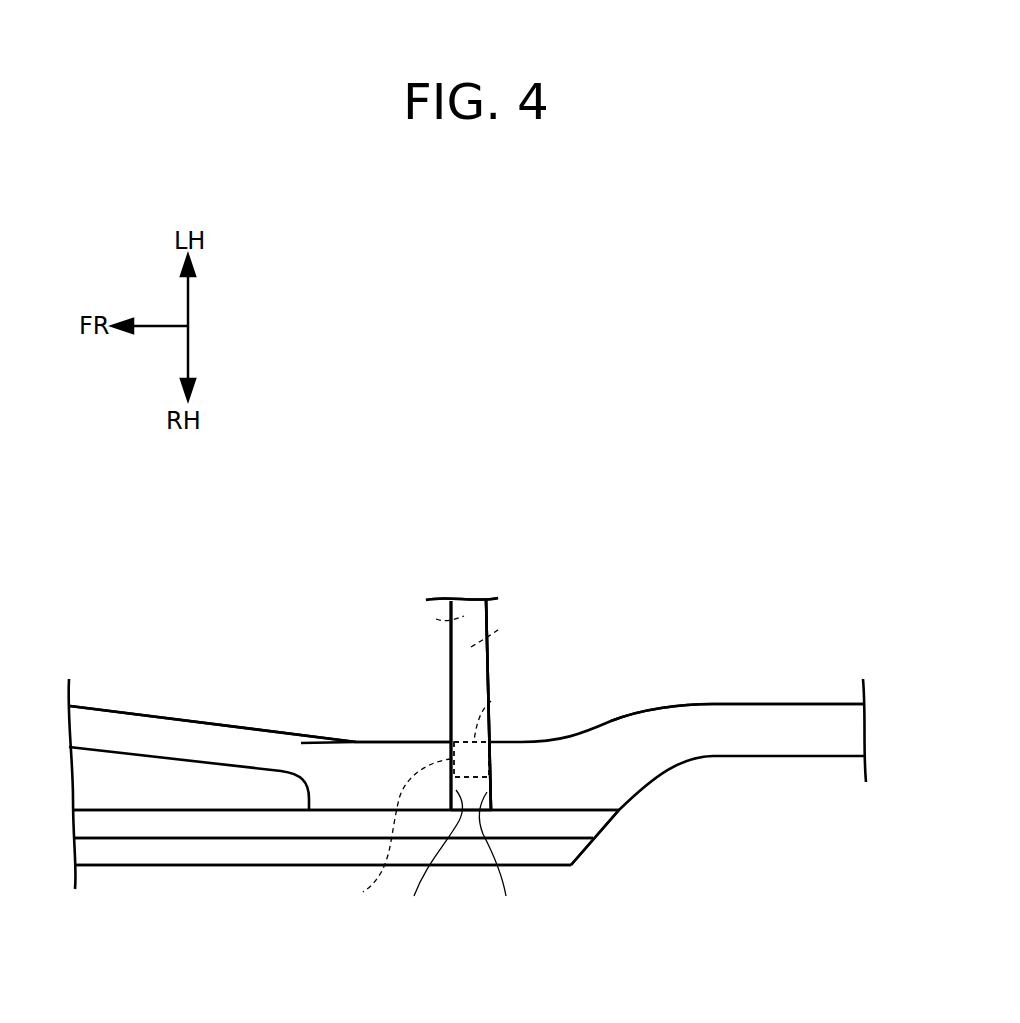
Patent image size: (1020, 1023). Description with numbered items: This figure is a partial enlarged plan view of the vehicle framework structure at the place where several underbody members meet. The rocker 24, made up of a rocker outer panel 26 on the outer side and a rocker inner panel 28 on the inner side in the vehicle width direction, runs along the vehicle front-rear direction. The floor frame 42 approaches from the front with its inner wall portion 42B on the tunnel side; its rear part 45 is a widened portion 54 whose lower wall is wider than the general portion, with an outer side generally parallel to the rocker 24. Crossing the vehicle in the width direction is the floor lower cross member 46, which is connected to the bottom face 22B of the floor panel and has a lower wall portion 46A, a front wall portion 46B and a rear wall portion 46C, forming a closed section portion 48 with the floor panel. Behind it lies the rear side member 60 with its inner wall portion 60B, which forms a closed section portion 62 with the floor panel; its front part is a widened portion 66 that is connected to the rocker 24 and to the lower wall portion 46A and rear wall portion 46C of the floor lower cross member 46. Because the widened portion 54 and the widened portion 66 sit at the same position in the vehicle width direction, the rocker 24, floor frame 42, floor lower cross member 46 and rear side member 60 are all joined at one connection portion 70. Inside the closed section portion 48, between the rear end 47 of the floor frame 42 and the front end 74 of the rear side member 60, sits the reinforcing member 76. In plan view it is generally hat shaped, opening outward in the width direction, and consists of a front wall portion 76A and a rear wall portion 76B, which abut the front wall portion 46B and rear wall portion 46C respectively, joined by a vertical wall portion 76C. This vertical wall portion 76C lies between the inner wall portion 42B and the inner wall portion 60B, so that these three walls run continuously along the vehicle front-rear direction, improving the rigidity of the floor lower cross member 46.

The bottom face 22B is at (443, 621).
The rocker 24 is at (240, 930).
The rocker outer panel 26 is at (217, 856).
The rocker inner panel 28 is at (178, 826).
The floor frame 42 is at (150, 712).
The inner wall portion 42B is at (197, 719).
The rear part 45 is at (336, 775).
The floor lower cross member 46 is at (492, 614).
The lower wall portion 46A is at (463, 635).
The front wall portion 46B is at (450, 660).
The rear wall portion 46C is at (490, 680).
The rear end 47 is at (431, 857).
The closed section portion 48 is at (470, 648).
The widened portion 54 is at (386, 765).
The rear side member 60 is at (812, 698).
The inner wall portion 60B is at (731, 705).
The closed section portion 62 is at (528, 799).
The widened portion 66 is at (593, 795).
The connection portion 70 is at (467, 880).
The front end 74 is at (501, 859).
The reinforcing member 76 is at (500, 760).
The front wall portion 76A is at (381, 834).
The rear wall portion 76B is at (495, 770).
The vertical wall portion 76C is at (488, 710).